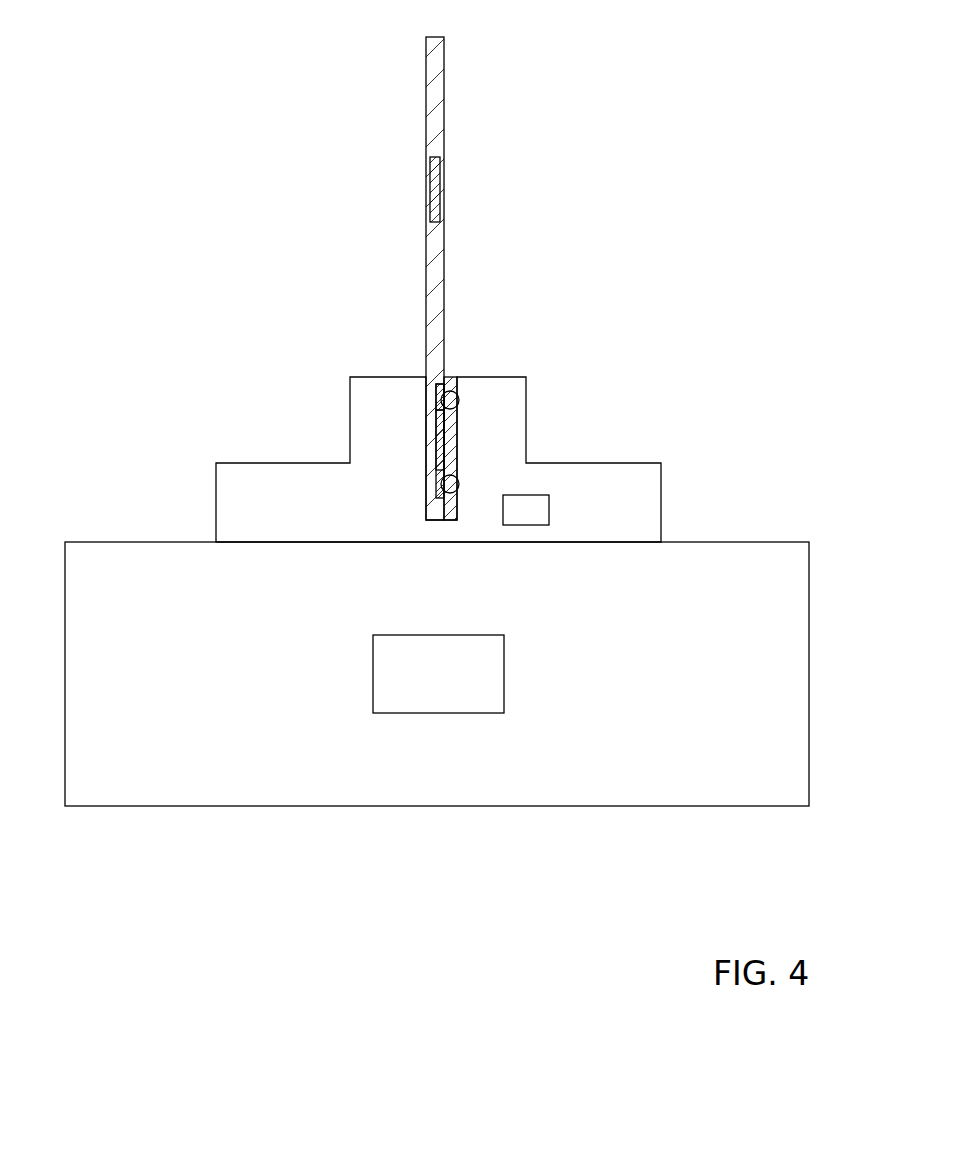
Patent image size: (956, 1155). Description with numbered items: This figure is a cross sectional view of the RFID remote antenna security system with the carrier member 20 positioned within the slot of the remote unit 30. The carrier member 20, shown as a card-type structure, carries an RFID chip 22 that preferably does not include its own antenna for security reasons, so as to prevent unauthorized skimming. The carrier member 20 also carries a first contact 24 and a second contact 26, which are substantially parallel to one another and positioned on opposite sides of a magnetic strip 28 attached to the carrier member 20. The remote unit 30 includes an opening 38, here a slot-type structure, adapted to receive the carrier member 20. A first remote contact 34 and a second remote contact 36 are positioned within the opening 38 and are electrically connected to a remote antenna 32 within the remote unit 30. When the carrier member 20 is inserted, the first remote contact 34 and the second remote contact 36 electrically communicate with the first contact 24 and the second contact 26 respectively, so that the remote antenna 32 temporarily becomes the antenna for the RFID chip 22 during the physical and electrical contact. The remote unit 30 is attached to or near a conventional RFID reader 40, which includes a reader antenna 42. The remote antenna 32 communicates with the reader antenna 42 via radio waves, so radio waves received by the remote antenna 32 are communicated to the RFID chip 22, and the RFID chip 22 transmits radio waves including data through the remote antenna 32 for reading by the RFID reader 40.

The carrier member 20 is at (445, 107).
The RFID chip 22 is at (435, 193).
The first contact 24 is at (445, 400).
The second contact 26 is at (440, 486).
The magnetic strip 28 is at (440, 443).
The remote unit 30 is at (620, 463).
The remote antenna 32 is at (530, 508).
The first remote contact 34 is at (449, 398).
The second remote contact 36 is at (453, 450).
The opening 38 is at (451, 475).
The RFID reader 40 is at (297, 806).
The reader antenna 42 is at (442, 670).